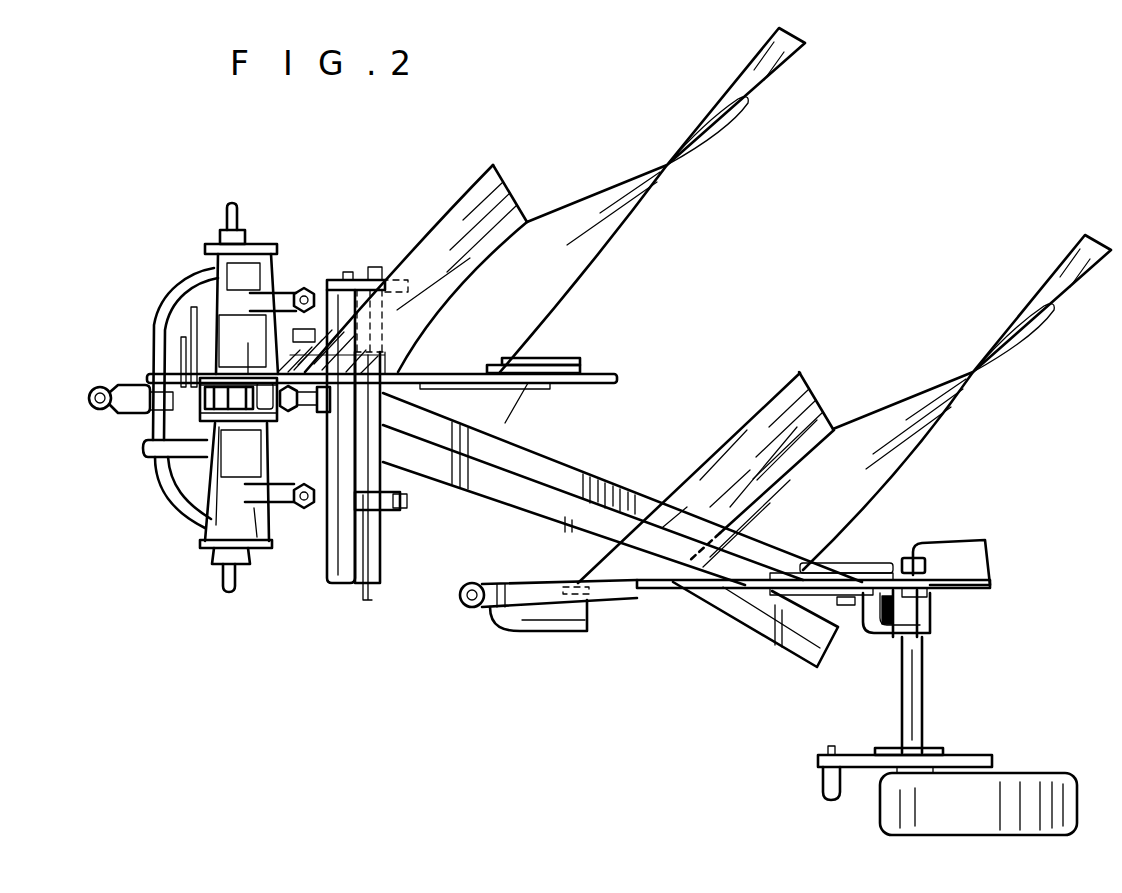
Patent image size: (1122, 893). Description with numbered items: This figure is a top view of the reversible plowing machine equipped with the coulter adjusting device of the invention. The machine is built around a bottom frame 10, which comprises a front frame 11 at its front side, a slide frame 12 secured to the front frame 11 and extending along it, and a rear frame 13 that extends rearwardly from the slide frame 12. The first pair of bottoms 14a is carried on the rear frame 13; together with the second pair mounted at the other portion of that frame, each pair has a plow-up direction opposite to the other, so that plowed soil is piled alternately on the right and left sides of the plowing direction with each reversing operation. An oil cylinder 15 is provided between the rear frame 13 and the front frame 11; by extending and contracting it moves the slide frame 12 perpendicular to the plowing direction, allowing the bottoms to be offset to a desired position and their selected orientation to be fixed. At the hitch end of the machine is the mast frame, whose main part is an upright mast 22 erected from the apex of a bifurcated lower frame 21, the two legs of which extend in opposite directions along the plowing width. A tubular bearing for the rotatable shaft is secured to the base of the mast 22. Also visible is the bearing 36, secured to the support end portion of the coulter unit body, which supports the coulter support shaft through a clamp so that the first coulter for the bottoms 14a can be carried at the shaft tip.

The bottom frame 10 is at (588, 468).
The front frame 11 is at (347, 587).
The slide frame 12 is at (388, 483).
The rear frame 13 is at (538, 477).
The first pair of bottoms 14a is at (457, 240).
The oil cylinder 15 is at (410, 360).
The bifurcated lower frame 21 is at (213, 527).
The mast 22 is at (200, 283).
The bearing 36 is at (97, 385).